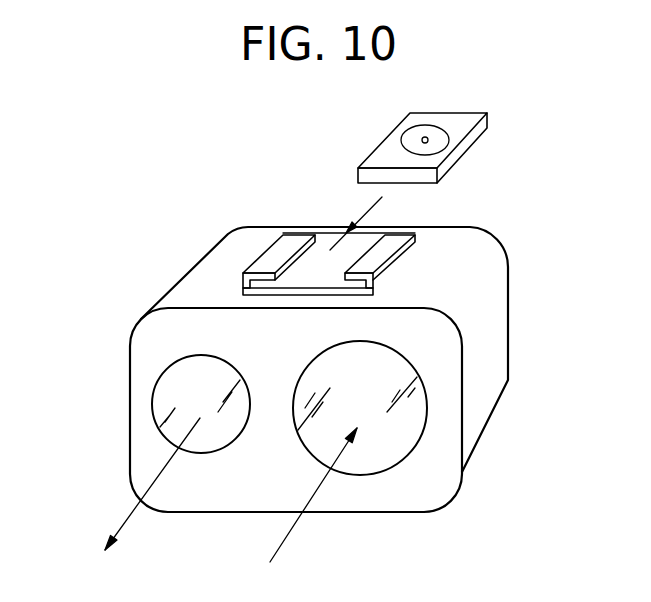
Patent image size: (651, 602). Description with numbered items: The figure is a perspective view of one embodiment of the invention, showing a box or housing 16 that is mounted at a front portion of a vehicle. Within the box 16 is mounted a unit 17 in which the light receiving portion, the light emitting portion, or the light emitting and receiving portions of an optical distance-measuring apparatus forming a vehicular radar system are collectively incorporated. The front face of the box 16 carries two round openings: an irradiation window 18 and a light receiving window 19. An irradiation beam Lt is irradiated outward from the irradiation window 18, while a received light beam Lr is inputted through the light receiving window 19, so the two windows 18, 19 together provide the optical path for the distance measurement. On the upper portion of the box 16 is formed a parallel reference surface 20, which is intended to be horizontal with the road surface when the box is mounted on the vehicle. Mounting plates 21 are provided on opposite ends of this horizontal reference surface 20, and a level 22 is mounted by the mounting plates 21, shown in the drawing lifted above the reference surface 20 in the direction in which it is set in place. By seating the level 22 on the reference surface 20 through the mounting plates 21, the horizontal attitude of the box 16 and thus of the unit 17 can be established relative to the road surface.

The box 16 is at (498, 331).
The unit 17 is at (140, 288).
The irradiation window 18 is at (170, 398).
The light receiving window 19 is at (398, 412).
The parallel reference surface 20 is at (323, 232).
The mounting plates 21 is at (270, 263).
The level 22 is at (373, 156).
The irradiation beam Lt is at (133, 513).
The received light beam Lr is at (288, 528).